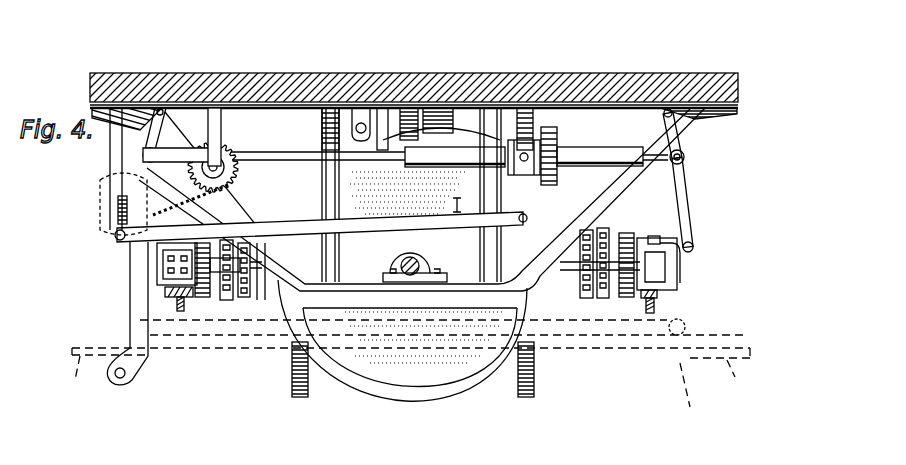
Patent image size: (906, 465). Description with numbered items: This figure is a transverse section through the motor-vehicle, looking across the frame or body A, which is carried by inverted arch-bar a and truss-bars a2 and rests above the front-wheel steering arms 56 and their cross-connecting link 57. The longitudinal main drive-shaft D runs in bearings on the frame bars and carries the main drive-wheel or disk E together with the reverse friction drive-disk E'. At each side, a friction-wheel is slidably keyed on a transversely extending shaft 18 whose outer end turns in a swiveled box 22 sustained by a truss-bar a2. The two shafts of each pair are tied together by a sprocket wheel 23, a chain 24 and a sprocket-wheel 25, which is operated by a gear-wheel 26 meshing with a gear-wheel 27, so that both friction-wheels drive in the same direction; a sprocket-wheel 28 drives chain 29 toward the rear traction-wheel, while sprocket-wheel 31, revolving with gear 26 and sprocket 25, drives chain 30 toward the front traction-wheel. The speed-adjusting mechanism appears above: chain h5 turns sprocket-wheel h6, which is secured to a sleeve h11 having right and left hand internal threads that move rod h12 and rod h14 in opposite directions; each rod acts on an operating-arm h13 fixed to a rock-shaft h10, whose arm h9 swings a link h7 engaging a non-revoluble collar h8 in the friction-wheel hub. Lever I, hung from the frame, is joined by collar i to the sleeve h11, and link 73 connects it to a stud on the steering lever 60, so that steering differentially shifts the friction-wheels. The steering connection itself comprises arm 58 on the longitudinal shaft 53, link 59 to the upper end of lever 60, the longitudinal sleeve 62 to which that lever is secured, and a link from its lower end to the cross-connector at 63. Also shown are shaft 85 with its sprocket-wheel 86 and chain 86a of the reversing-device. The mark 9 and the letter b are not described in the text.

The frame or body A is at (720, 88).
The inverted arch-bar a is at (643, 192).
The block 9 is at (425, 108).
The longitudinally extending shaft 53 is at (371, 106).
The link 57 is at (362, 108).
The arm 58 is at (385, 108).
The collar i is at (535, 141).
The sprocket-wheel h6 is at (553, 142).
The sleeve h11 is at (597, 148).
The operating-arm h13 is at (679, 140).
The rod h12 is at (680, 190).
The arm h9 is at (695, 195).
The link h7 is at (570, 216).
The gear-wheel 26 is at (660, 240).
The rock-shaft h10 is at (160, 108).
The shaft 85 is at (220, 142).
The rod h14 is at (298, 135).
The link 59 is at (287, 128).
The sprocket-wheel 86 is at (230, 165).
The chain 86a is at (222, 155).
The lever 60 is at (100, 200).
The non-revoluble collar h8 is at (100, 185).
The chain 24 is at (262, 228).
The link 73 is at (390, 228).
The chain h5 is at (540, 180).
The sprocket-wheel 31 is at (599, 232).
The sprocket-wheel 25 is at (590, 300).
The chain 30 is at (618, 300).
The truss-bar a2 is at (656, 305).
The swiveled box 22 is at (162, 268).
The gear-wheel 27 is at (205, 298).
The sprocket-wheel 28 is at (227, 300).
The chain 29 is at (233, 300).
The sprocket wheel 23 is at (247, 300).
The shaft 18 is at (257, 300).
The base b is at (158, 421).
The longitudinal sleeve 62 is at (187, 333).
The main drive-shaft D is at (408, 275).
The main drive-wheel or disk E is at (402, 360).
The friction drive-disk E' is at (382, 425).
The arm 56 is at (411, 363).
The connection point 63 is at (704, 424).